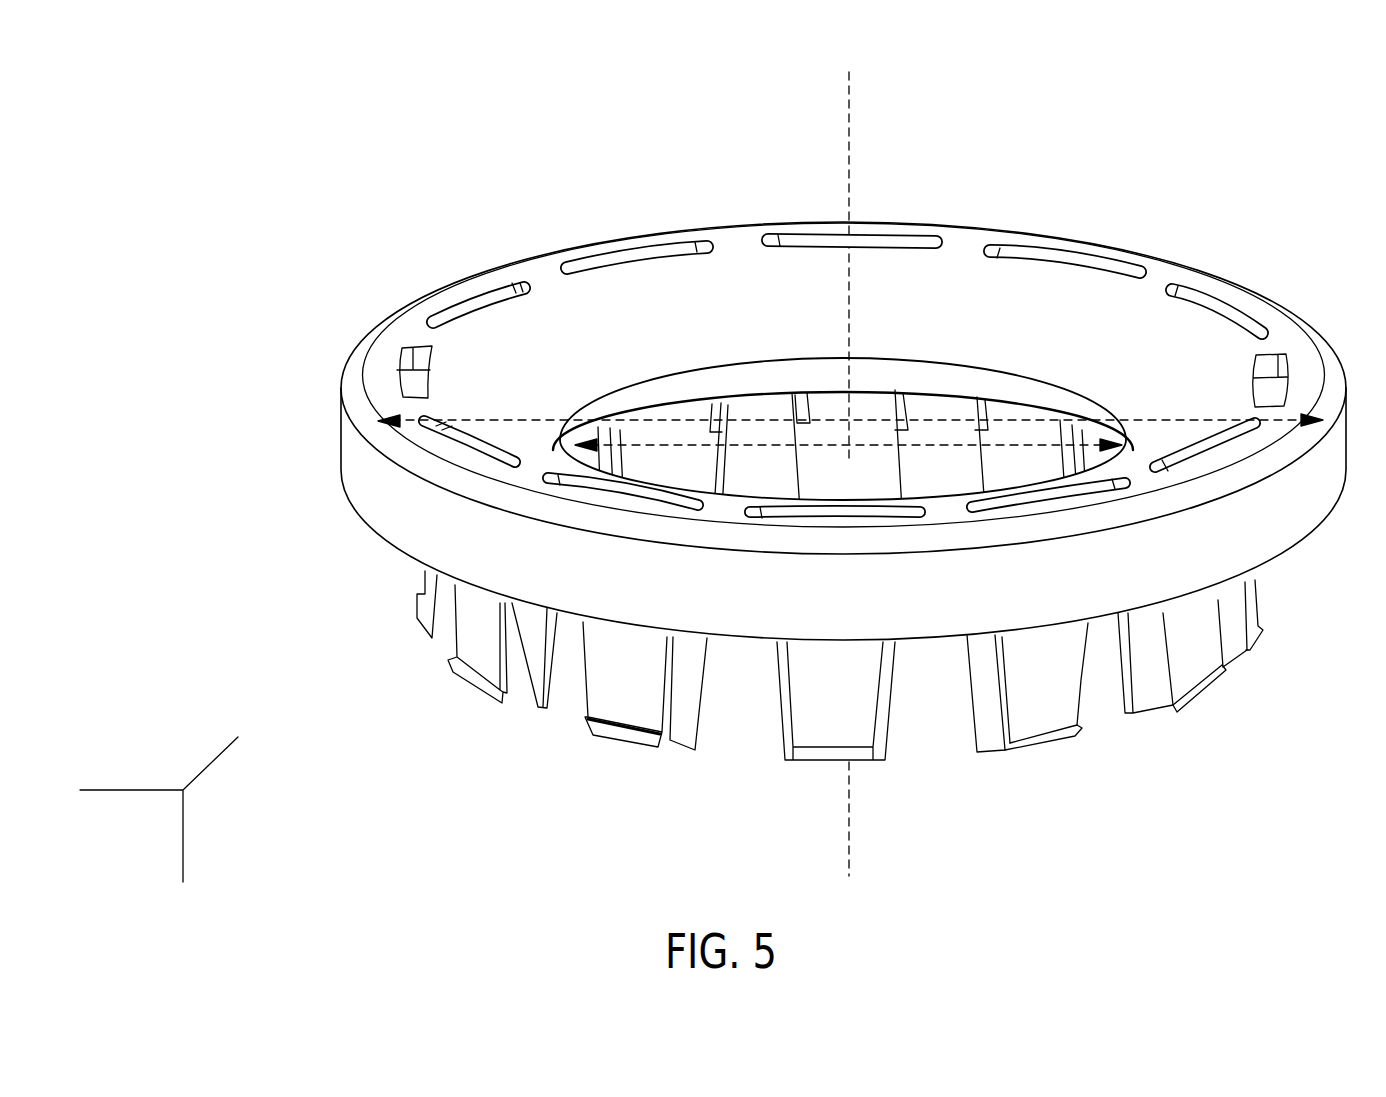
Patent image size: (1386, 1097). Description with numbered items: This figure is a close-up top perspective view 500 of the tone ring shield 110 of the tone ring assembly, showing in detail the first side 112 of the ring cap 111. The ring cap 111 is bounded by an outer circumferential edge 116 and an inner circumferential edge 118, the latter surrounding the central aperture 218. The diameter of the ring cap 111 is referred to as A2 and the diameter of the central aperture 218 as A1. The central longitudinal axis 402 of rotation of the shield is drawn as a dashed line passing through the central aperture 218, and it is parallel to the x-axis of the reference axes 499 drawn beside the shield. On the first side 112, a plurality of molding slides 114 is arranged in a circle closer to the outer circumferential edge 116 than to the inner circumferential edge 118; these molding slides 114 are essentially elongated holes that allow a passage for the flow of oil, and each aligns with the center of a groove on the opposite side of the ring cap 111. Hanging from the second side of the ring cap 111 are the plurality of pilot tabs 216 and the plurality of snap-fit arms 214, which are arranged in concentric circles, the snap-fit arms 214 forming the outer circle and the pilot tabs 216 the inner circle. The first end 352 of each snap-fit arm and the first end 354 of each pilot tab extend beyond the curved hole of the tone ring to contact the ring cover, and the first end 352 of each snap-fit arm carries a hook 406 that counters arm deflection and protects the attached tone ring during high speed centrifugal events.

The close-up top perspective view 500 is at (118, 140).
The tone ring shield 110 is at (336, 208).
The ring cap 111 is at (360, 358).
The first side 112 is at (556, 308).
The plurality of molding slides 114 is at (683, 242).
The outer circumferential edge 116 is at (1300, 522).
The inner circumferential edge 118 is at (990, 387).
The central aperture 218 is at (750, 473).
The plurality of pilot tabs 216 is at (528, 665).
The plurality of snap-fit arms 214 is at (1020, 698).
The first end of each snap-fit arm 352 is at (1040, 713).
The first end of each pilot tab 354 is at (990, 740).
The hook 406 is at (1198, 692).
The central longitudinal axis 402 is at (854, 798).
The reference axes 499 is at (132, 720).
The diameter of the central aperture A1 is at (963, 440).
The diameter of the ring cap A2 is at (540, 415).